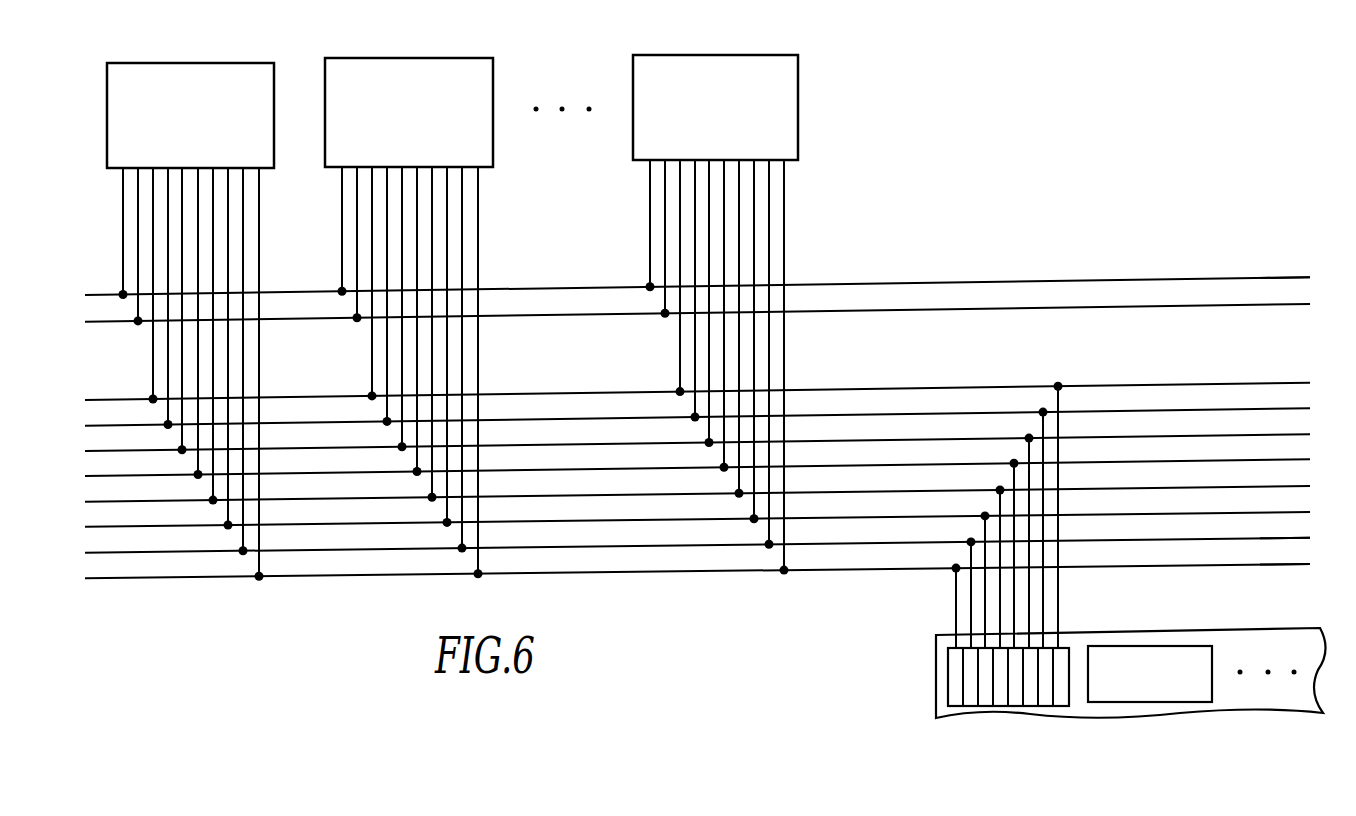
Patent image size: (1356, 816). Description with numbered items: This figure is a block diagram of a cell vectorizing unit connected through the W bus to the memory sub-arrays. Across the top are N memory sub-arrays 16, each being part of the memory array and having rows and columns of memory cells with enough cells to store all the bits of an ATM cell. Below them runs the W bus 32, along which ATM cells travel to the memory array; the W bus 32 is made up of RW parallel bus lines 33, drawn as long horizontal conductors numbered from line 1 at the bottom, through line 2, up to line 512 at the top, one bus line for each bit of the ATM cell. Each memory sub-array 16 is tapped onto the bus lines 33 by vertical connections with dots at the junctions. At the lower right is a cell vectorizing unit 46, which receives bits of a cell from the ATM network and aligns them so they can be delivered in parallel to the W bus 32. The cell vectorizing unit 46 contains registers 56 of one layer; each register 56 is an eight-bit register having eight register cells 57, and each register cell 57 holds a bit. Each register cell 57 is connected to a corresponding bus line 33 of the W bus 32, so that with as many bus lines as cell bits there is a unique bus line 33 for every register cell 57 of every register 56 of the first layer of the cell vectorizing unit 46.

The memory sub-array 16 is at (452, 318).
The W bus 32 is at (697, 408).
The bus line 33 is at (545, 288).
The cell vectorizing unit 46 is at (1092, 578).
The register 56 is at (1067, 706).
The register cell 57 is at (1048, 698).
The bus line 512 is at (1308, 279).
The bus line 2 is at (1296, 538).
The bus line 1 is at (1296, 564).